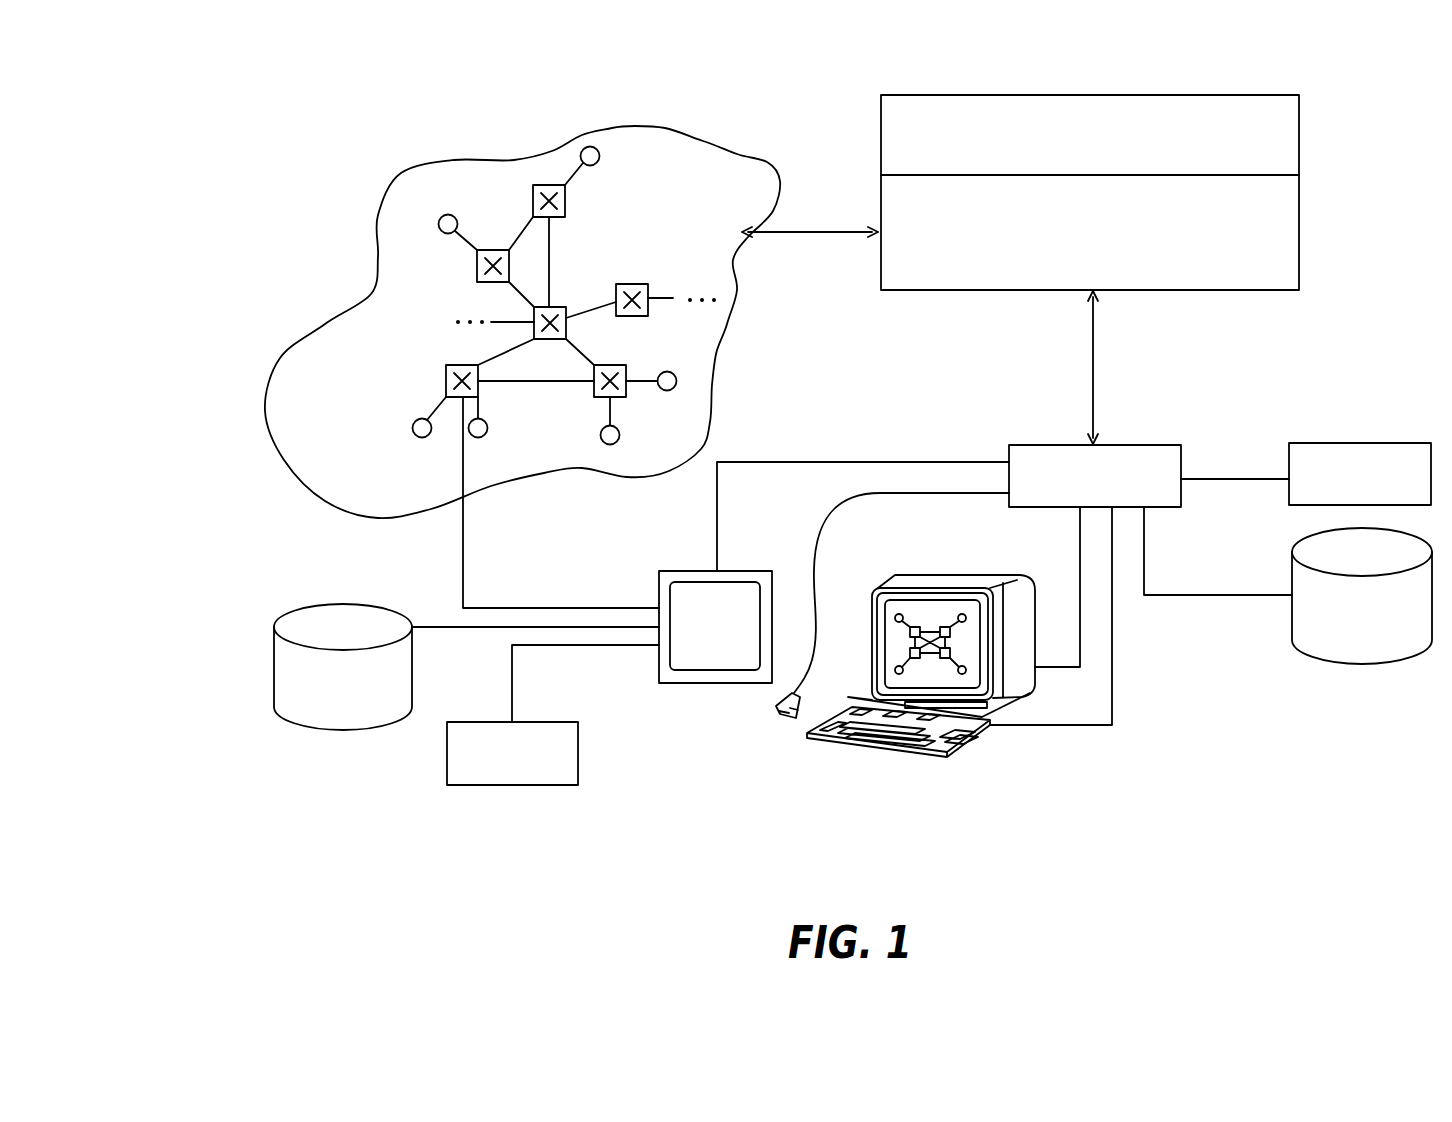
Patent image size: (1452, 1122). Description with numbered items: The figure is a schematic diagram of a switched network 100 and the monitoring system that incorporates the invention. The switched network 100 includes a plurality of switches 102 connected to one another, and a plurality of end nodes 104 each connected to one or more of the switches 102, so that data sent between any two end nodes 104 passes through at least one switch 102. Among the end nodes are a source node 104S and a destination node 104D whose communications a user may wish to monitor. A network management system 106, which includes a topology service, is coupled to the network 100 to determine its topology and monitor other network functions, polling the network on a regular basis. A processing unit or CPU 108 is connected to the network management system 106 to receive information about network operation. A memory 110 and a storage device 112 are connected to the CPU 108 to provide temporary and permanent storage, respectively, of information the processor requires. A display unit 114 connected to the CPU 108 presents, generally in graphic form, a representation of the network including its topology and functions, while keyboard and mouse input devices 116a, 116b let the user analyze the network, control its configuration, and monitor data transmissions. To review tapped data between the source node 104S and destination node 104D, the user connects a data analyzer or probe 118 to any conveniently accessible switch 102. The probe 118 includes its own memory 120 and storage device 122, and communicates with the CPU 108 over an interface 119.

The switched network 100 is at (635, 126).
The switch 102 is at (566, 205).
The end node 104 is at (667, 371).
The source node 104S is at (600, 154).
The destination node 104D is at (449, 214).
The network management system 106 is at (1299, 195).
The CPU 108 is at (1151, 445).
The memory 110 is at (1402, 443).
The storage device 112 is at (1408, 662).
The display unit 114 is at (962, 574).
The keyboard input device 116a is at (947, 753).
The mouse input device 116b is at (781, 720).
The probe 118 is at (687, 685).
The interface 119 is at (838, 460).
The memory 120 is at (470, 787).
The storage device 122 is at (274, 660).